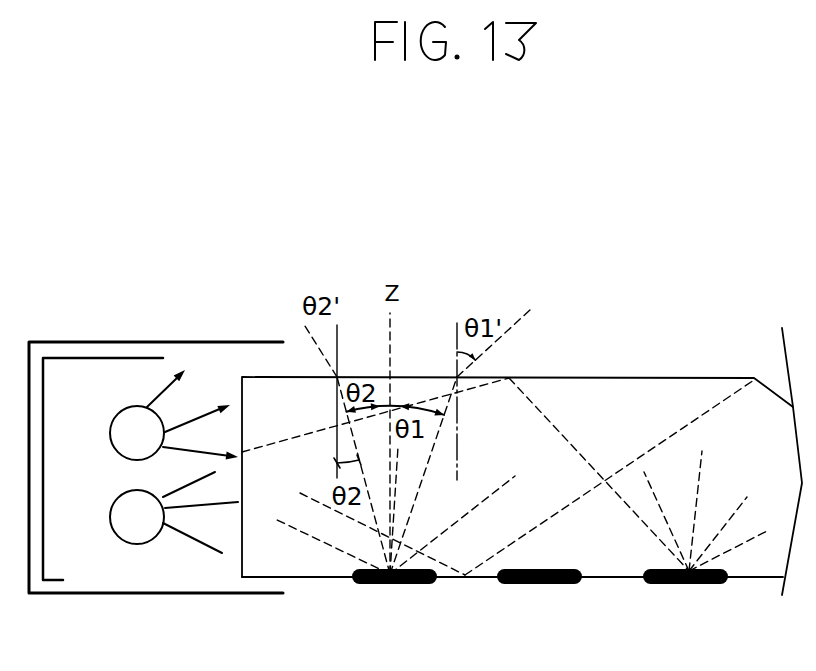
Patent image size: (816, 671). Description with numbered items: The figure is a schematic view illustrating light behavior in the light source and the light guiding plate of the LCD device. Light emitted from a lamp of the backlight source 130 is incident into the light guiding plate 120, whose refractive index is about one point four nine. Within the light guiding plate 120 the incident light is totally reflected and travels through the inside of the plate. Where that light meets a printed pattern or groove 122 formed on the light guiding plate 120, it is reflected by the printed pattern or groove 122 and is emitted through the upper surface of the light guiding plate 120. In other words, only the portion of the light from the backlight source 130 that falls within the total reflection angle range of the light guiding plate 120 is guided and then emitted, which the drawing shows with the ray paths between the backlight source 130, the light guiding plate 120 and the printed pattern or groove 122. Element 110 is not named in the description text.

The printed pattern or groove 122 is at (687, 585).
The light guiding plate 120 is at (522, 461).
The light sources (LEDs) 110 is at (174, 461).
The backlight source 130 is at (156, 467).